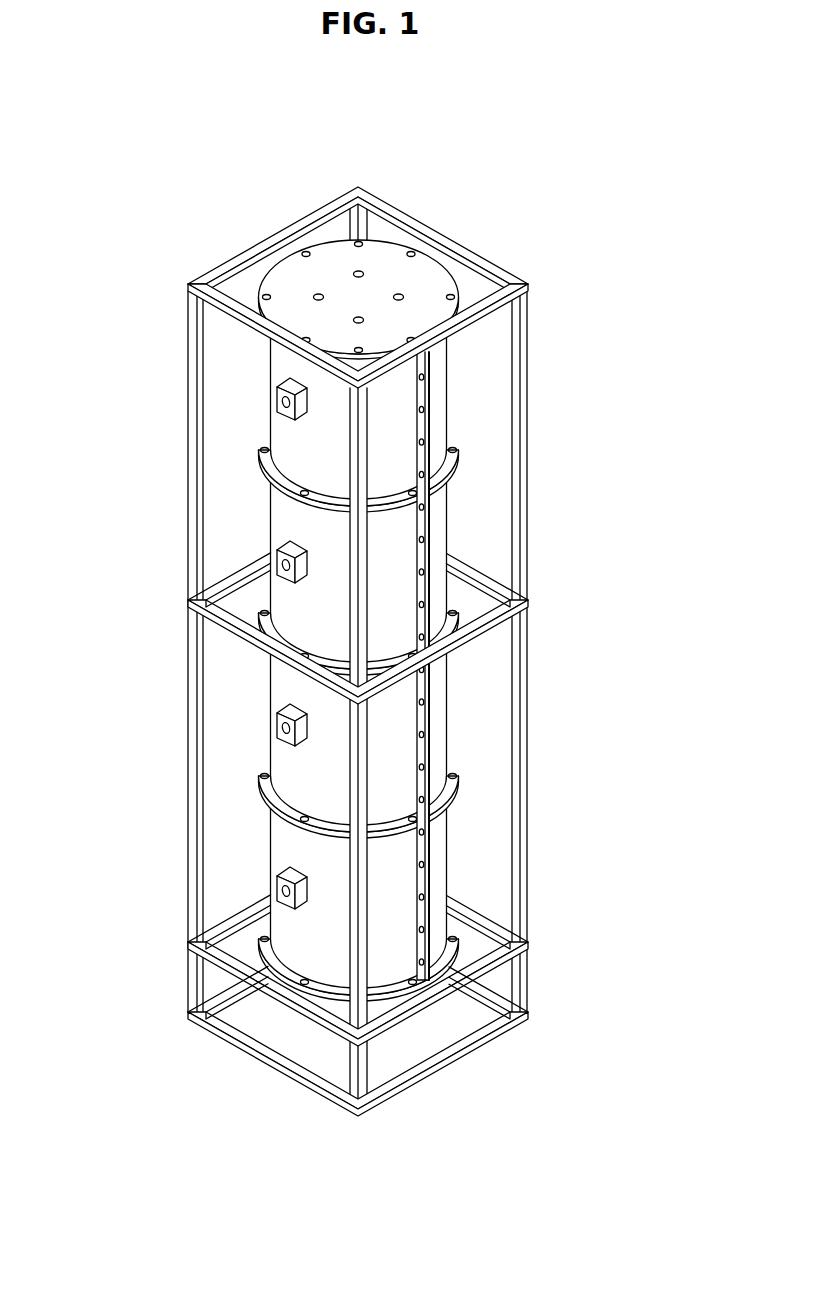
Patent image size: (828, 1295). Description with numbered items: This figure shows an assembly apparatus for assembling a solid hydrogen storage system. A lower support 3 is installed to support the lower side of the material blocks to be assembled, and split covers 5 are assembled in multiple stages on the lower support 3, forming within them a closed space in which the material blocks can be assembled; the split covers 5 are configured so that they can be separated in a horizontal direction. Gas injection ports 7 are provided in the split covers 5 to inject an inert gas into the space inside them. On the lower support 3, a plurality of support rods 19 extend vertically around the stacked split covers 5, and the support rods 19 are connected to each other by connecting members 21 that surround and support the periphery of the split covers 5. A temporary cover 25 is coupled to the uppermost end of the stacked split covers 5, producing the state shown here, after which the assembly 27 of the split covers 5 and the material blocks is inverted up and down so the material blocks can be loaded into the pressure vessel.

The lower support 3 is at (433, 992).
The split covers 5 is at (292, 440).
The gas injection ports 7 is at (275, 402).
The support rods 19 is at (193, 507).
The connecting members 21 is at (247, 257).
The temporary cover 25 is at (327, 258).
The assembly 27 is at (543, 412).